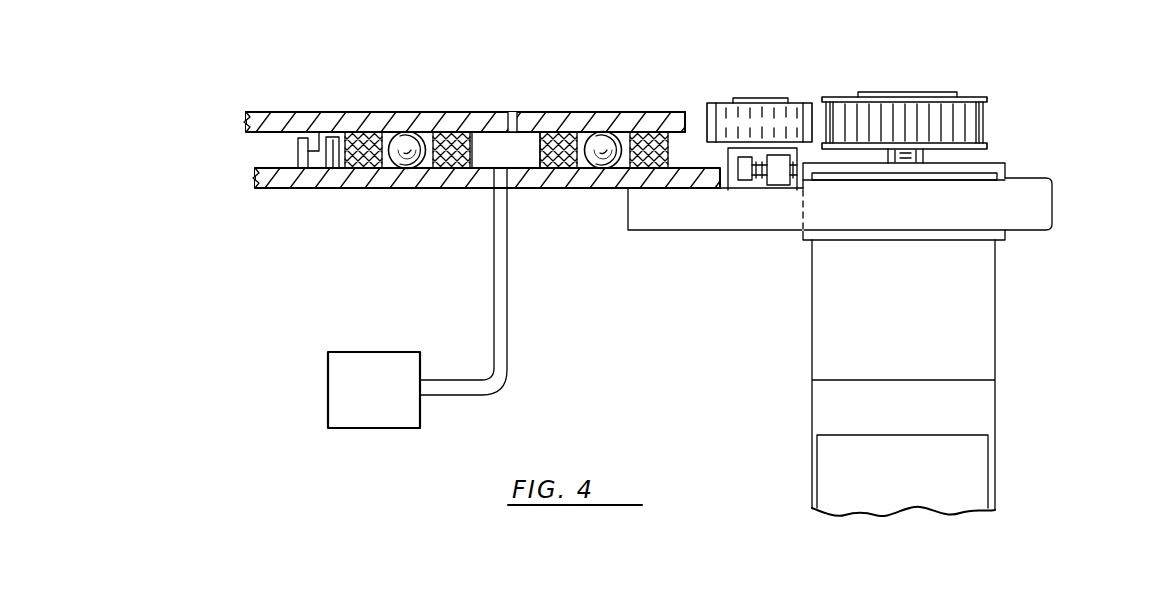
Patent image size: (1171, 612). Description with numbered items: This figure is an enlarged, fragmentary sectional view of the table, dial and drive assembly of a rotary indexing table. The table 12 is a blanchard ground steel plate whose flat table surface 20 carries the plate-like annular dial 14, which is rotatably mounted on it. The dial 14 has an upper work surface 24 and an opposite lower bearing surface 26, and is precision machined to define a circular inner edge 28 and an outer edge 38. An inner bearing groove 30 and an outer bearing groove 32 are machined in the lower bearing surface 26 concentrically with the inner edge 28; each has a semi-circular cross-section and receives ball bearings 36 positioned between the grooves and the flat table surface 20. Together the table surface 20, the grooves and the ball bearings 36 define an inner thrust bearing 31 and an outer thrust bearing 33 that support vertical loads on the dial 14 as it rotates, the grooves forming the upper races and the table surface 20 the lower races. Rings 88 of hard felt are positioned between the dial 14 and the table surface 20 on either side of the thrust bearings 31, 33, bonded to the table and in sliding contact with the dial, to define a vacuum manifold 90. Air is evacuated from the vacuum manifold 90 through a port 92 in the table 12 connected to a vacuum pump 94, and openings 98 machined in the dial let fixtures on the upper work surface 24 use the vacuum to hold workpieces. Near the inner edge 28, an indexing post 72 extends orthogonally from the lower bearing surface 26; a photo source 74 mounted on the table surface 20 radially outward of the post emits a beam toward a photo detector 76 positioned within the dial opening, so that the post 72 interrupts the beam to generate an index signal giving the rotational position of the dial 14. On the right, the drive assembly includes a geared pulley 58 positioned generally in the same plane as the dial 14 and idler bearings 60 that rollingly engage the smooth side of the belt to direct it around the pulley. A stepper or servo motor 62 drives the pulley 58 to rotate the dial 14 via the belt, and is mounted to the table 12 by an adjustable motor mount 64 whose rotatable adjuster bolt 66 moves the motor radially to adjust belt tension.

The table 12 is at (282, 187).
The dial 14 is at (588, 112).
The table surface 20 is at (703, 168).
The upper work surface 24 is at (470, 112).
The lower bearing surface 26 is at (282, 130).
The inner edge 28 is at (318, 133).
The inner bearing groove 30 is at (404, 135).
The inner thrust bearing 31 is at (416, 174).
The outer bearing groove 32 is at (603, 134).
The outer thrust bearing 33 is at (584, 172).
The ball bearings 36 is at (403, 158).
The outer edge 38 is at (687, 122).
The geared pulley 58 is at (965, 100).
The idler bearings 60 is at (795, 106).
The servo motor 62 is at (988, 302).
The motor mount 64 is at (800, 215).
The adjuster bolt 66 is at (745, 188).
The indexing post 72 is at (307, 150).
The photo source 74 is at (320, 170).
The photo detector 76 is at (297, 157).
The rings 88 is at (365, 140).
The vacuum manifold 90 is at (486, 152).
The port 92 is at (497, 178).
The vacuum pump 94 is at (388, 398).
The openings 98 is at (512, 130).